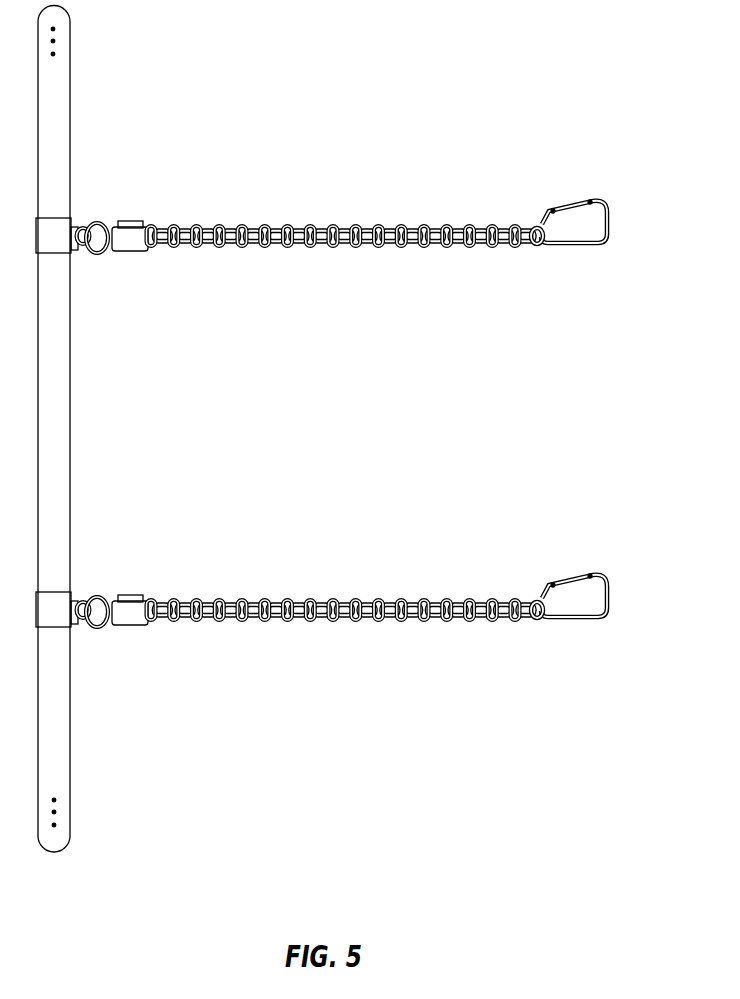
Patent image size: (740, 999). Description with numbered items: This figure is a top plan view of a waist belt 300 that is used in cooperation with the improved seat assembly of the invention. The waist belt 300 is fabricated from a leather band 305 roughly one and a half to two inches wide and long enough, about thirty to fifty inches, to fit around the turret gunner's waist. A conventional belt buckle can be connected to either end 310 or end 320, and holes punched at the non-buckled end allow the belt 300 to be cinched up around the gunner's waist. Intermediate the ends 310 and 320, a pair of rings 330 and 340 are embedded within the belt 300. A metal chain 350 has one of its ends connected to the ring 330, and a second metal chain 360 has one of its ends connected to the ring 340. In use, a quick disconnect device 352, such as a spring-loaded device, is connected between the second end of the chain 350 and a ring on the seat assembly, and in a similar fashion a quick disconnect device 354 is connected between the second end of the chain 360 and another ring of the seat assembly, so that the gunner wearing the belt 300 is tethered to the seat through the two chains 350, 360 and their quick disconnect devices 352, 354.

The waist belt 300 is at (327, 47).
The leather band 305 is at (62, 393).
The end 310 is at (62, 40).
The end 320 is at (63, 811).
The ring 330 is at (77, 220).
The ring 340 is at (77, 594).
The metal chain 350 is at (296, 227).
The second metal chain 360 is at (296, 601).
The quick disconnect device 352 is at (588, 201).
The quick disconnect device 354 is at (588, 575).